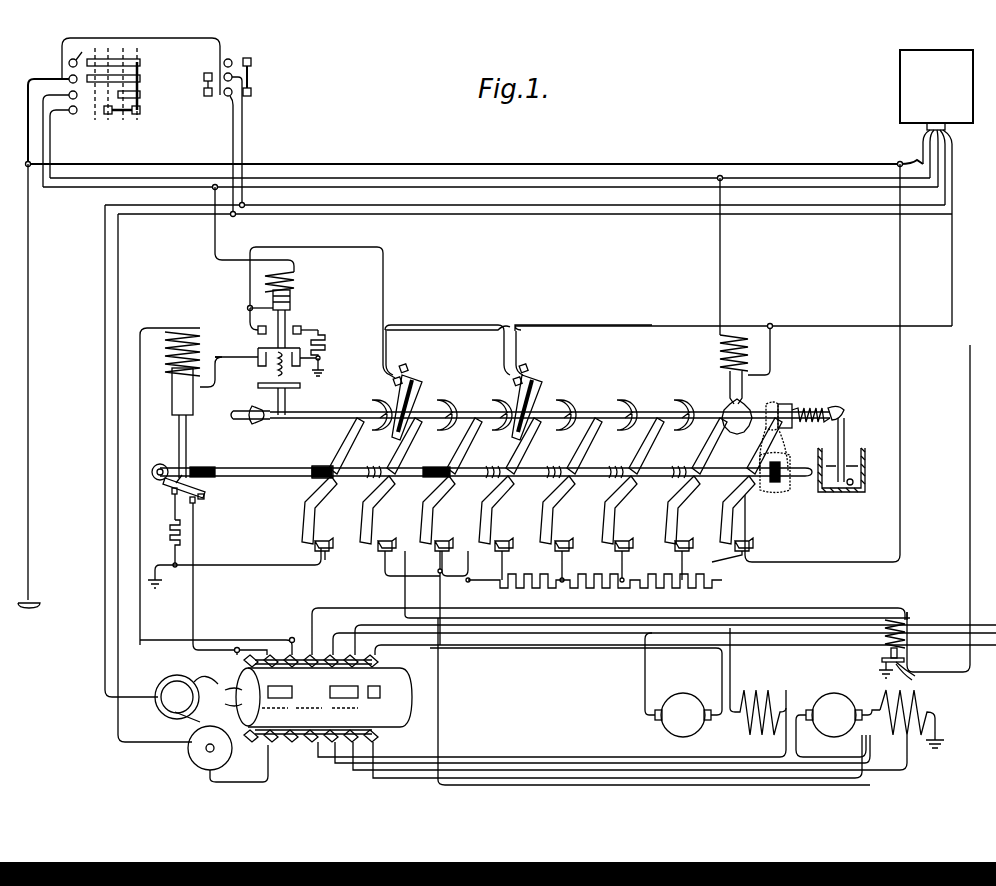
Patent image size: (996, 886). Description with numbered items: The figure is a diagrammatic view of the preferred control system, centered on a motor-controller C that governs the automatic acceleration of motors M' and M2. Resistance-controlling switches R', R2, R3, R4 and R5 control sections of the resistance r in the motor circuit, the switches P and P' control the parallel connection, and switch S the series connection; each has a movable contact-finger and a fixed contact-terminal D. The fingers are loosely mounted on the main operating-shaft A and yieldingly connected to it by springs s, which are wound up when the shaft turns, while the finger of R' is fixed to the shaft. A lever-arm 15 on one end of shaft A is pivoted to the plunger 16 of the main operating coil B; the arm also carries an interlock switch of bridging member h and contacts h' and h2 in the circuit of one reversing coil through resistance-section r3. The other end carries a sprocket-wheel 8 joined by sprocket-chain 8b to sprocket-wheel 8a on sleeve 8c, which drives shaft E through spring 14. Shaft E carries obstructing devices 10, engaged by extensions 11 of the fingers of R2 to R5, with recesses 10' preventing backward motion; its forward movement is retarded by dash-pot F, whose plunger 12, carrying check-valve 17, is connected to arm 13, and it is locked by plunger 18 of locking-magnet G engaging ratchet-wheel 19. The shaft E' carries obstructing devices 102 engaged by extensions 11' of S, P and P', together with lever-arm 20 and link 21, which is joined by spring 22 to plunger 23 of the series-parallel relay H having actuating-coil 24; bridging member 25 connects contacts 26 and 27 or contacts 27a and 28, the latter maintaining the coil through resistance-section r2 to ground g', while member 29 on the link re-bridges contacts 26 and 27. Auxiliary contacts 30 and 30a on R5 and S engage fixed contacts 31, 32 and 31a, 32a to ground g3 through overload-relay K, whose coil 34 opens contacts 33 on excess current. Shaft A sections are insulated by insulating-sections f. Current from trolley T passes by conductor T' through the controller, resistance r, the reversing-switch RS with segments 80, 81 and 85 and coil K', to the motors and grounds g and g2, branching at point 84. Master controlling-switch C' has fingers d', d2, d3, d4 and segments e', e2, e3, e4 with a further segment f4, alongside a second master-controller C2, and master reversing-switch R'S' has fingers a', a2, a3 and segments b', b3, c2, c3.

The sprocket-wheel 8 is at (775, 490).
The sprocket-wheel 8a is at (764, 404).
The sprocket-chain 8b is at (788, 450).
The sleeve 8c is at (786, 428).
The obstructing devices 10 is at (589, 404).
The recesses 10' is at (584, 437).
The obstructing devices 102 is at (436, 440).
The extensions 11 is at (602, 439).
The extensions 11' is at (378, 442).
The plunger 12 is at (845, 430).
The arm 13 is at (846, 414).
The spring 14 is at (812, 406).
The lever-arm 15 is at (172, 484).
The plunger 16 is at (172, 402).
The check-valve 17 is at (854, 482).
The plunger 18 is at (730, 385).
The ratchet-wheel 19 is at (737, 434).
The lever-arm 20 is at (262, 420).
The link 21 is at (286, 406).
The spring 22 is at (287, 370).
The plunger 23 is at (291, 308).
The actuating-coil 24 is at (295, 293).
The bridging contact member 25 is at (258, 348).
The contact 26 is at (258, 360).
The contact 27 is at (300, 356).
The contact 27a is at (248, 334).
The contact 28 is at (314, 326).
The bridging contact member 29 is at (258, 388).
The bridging contact 30 is at (542, 388).
The bridging contact 30a is at (422, 388).
The fixed contact 31 is at (513, 382).
The fixed contact 31a is at (393, 378).
The fixed contact 32 is at (527, 364).
The fixed contact 32a is at (407, 364).
The contacts 33 is at (913, 675).
The actuating-coil 34 is at (883, 634).
The auxiliary contact-segment 80 is at (300, 670).
The contact-segment 81 is at (272, 686).
The branching point 84 is at (470, 580).
The contact-segment 85 is at (282, 728).
The main operating-shaft A is at (265, 475).
The main operating coil B is at (179, 315).
The motor-controller C is at (614, 358).
The master controlling-switch C' is at (141, 72).
The master-controller C2 is at (918, 132).
The contact-terminals D is at (378, 548).
The shaft E is at (657, 396).
The shaft E' is at (550, 399).
The dash-pot F is at (849, 470).
The locking-magnet G is at (720, 358).
The series-parallel relay H is at (307, 277).
The overload-relay K is at (537, 660).
The actuating-coil K' is at (214, 754).
The motor M' is at (576, 685).
The motor M2 is at (838, 716).
The switch P is at (333, 481).
The switch P' is at (451, 481).
The switch R' is at (751, 481).
The switch R2 is at (696, 481).
The switch R3 is at (633, 481).
The switch R4 is at (571, 481).
The switch R5 is at (510, 481).
The reversing-switch RS is at (318, 719).
The switch S is at (391, 481).
The trolley or collector-shoe T is at (35, 386).
The conductor T' is at (489, 180).
The contact-finger a' is at (241, 120).
The contact-finger a2 is at (231, 60).
The contact-finger a3 is at (225, 95).
The contact-segment b' is at (257, 58).
The contact-segment b3 is at (251, 94).
The contact-segment c2 is at (204, 75).
The contact-segment c3 is at (204, 94).
The contact-finger d' is at (73, 56).
The contact-finger d2 is at (52, 112).
The contact-finger d3 is at (60, 133).
The contact-finger d4 is at (63, 142).
The contact-segment e' is at (123, 63).
The contact-segment e2 is at (140, 79).
The contact-segment e3 is at (140, 95).
The contact-segment e4 is at (104, 112).
The insulating-sections f is at (768, 492).
The key bar f4 is at (140, 110).
The ground g is at (161, 582).
The ground g' is at (323, 371).
The ground g2 is at (944, 747).
The ground g3 is at (877, 677).
The bridging member h is at (209, 496).
The contact h' is at (187, 558).
The contact h2 is at (163, 505).
The resistance r is at (722, 586).
The resistance-section r2 is at (325, 343).
The resistance-section r3 is at (182, 532).
The springs s is at (464, 457).
The master reversing-switch R'S' is at (276, 79).